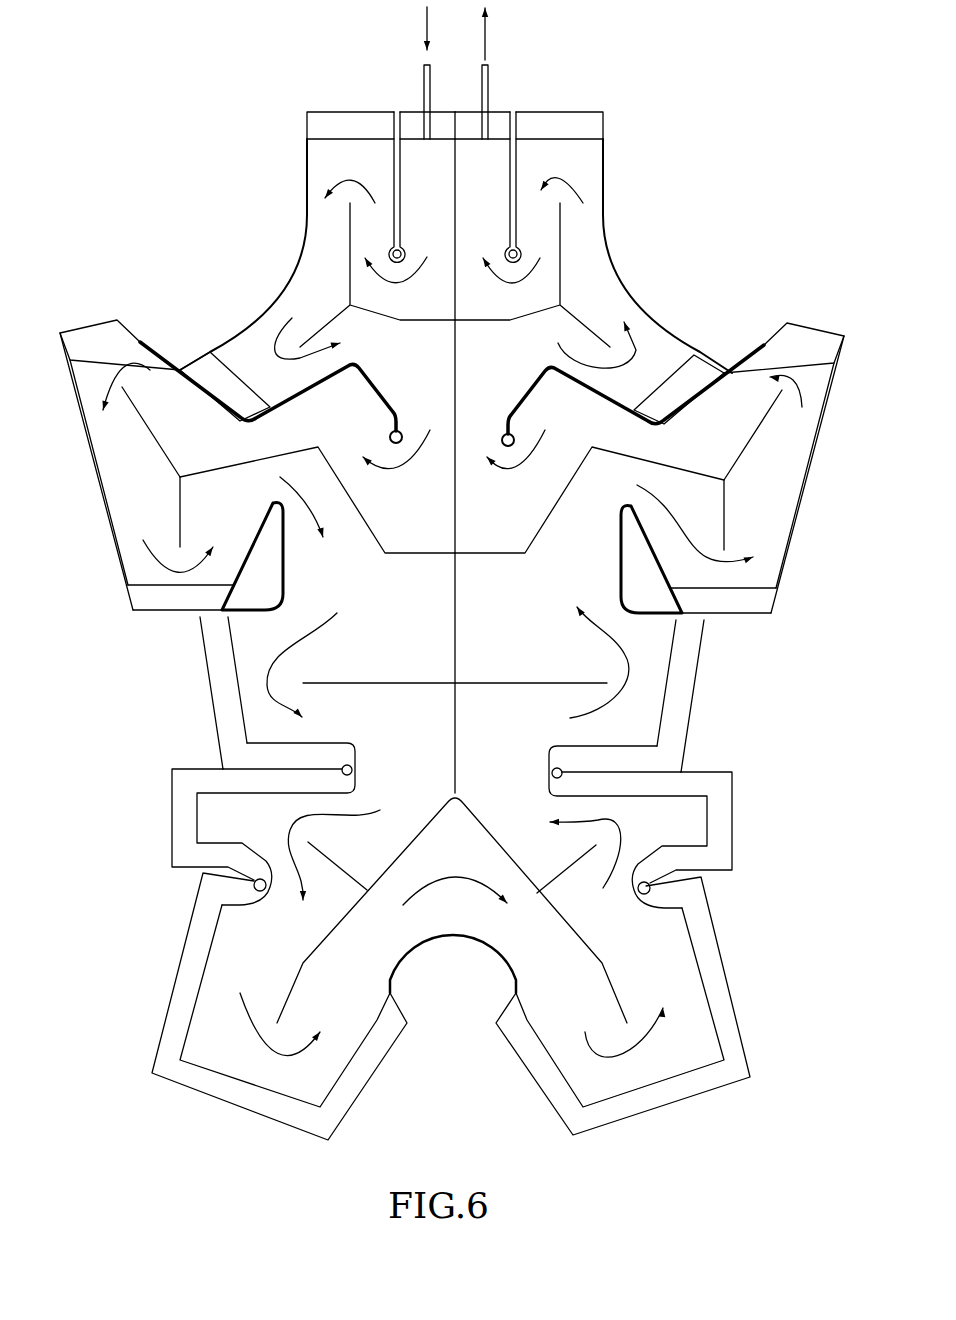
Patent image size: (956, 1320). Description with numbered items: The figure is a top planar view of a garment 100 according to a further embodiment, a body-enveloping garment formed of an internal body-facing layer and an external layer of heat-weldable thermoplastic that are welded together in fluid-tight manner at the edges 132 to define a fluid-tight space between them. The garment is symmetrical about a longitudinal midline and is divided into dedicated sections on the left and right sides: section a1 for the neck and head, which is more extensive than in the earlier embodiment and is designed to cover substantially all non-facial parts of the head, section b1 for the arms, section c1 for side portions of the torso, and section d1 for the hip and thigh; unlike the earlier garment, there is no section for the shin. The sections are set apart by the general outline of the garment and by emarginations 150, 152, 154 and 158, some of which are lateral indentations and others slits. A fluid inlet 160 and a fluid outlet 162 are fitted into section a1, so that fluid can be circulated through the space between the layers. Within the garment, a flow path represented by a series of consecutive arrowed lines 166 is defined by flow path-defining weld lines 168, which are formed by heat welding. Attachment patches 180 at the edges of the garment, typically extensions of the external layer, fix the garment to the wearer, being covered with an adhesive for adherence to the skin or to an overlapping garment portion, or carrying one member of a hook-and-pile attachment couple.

The garment 100 is at (160, 125).
The fluid inlet 160 is at (423, 82).
The fluid outlet 162 is at (488, 83).
The attachment patches 180 is at (327, 122).
The emargination 150 is at (238, 416).
The flow path-defining weld lines 168 is at (552, 320).
The arrowed lines 166 is at (275, 342).
The emargination 152 is at (230, 616).
The edges 132 is at (220, 660).
The emargination 154 is at (344, 767).
The emargination 158 is at (448, 953).
The section a1 is at (322, 242).
The section b1 is at (113, 453).
The section c1 is at (247, 672).
The section d1 is at (222, 960).